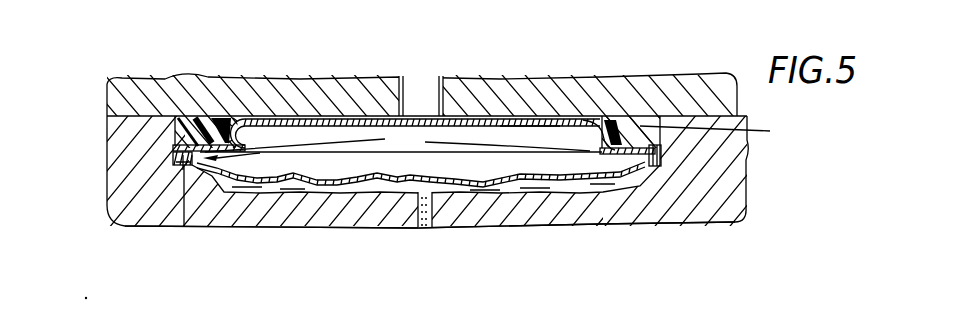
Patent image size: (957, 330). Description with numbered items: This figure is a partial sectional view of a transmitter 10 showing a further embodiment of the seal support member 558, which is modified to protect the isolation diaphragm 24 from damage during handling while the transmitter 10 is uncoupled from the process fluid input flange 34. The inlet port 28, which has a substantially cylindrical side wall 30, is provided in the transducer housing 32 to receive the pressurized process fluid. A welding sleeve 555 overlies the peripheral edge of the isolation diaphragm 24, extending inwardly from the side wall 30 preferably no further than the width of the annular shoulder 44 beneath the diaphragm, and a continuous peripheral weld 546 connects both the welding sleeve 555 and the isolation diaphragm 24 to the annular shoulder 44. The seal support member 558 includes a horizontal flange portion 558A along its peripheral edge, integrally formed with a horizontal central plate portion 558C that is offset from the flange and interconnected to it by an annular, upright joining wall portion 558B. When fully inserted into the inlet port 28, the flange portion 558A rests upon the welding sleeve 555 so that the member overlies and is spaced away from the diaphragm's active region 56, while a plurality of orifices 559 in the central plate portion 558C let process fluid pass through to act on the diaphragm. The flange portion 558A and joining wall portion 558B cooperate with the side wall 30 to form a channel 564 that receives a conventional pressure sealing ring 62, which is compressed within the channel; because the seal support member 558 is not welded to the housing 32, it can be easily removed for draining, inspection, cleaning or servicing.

The transmitter 10 is at (430, 147).
The isolation diaphragm 24 is at (531, 188).
The inlet port 28 is at (456, 140).
The side wall 30 is at (650, 143).
The transducer housing 32 is at (712, 162).
The process fluid input flange 34 is at (695, 84).
The annular shoulder 44 is at (192, 178).
The active region 56 is at (401, 92).
The pressure sealing ring 62 is at (722, 132).
The continuous peripheral weld 546 is at (183, 170).
The welding sleeve 555 is at (174, 149).
The seal support member 558 is at (422, 79).
The horizontal flange portion 558A is at (235, 118).
The joining wall portion 558B is at (207, 118).
The horizontal central plate portion 558C is at (327, 119).
The orifices 559 is at (547, 120).
The channel 564 is at (660, 100).